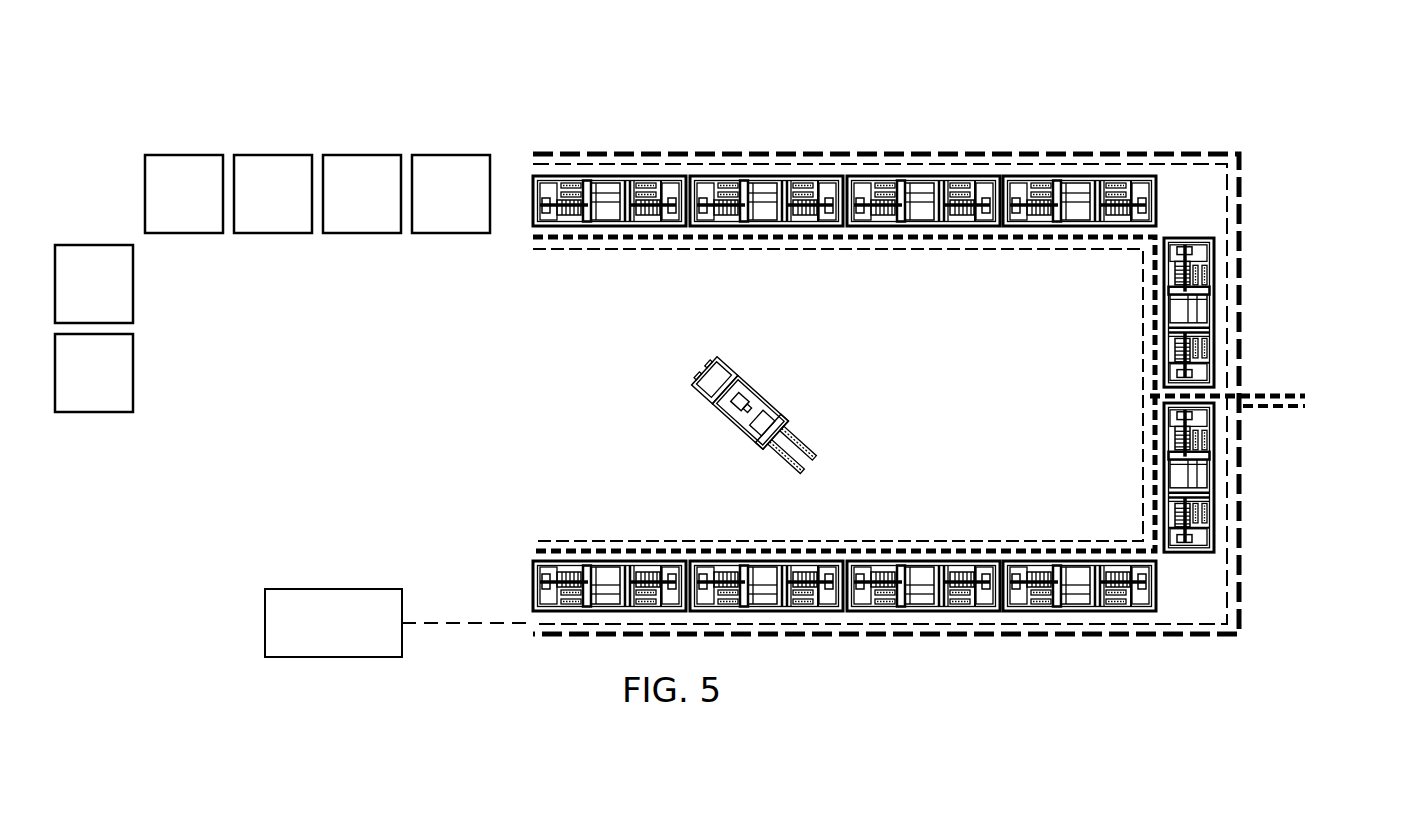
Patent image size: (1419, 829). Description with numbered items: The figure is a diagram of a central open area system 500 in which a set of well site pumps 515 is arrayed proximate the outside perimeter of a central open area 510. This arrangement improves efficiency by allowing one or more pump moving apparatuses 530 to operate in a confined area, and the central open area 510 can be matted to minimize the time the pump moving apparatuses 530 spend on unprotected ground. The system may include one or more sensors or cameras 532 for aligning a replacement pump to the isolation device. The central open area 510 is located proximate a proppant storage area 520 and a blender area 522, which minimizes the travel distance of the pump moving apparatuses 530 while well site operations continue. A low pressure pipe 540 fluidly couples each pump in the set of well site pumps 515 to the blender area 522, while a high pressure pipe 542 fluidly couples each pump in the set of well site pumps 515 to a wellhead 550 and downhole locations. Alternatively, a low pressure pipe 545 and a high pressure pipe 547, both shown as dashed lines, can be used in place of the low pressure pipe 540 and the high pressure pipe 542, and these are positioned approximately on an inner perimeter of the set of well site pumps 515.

The central open area system 500 is at (1005, 104).
The central open area 510 is at (995, 406).
The set of well site pumps 515 is at (1180, 237).
The proppant storage area 520 is at (141, 193).
The blender area 522 is at (330, 657).
The pump moving apparatus 530 is at (708, 436).
The sensors or cameras 532 is at (713, 407).
The low pressure pipe 540 is at (455, 620).
The high pressure pipe 542 is at (1070, 636).
The low pressure pipe 545 is at (924, 251).
The high pressure pipe 547 is at (842, 240).
The wellhead 550 is at (1270, 409).